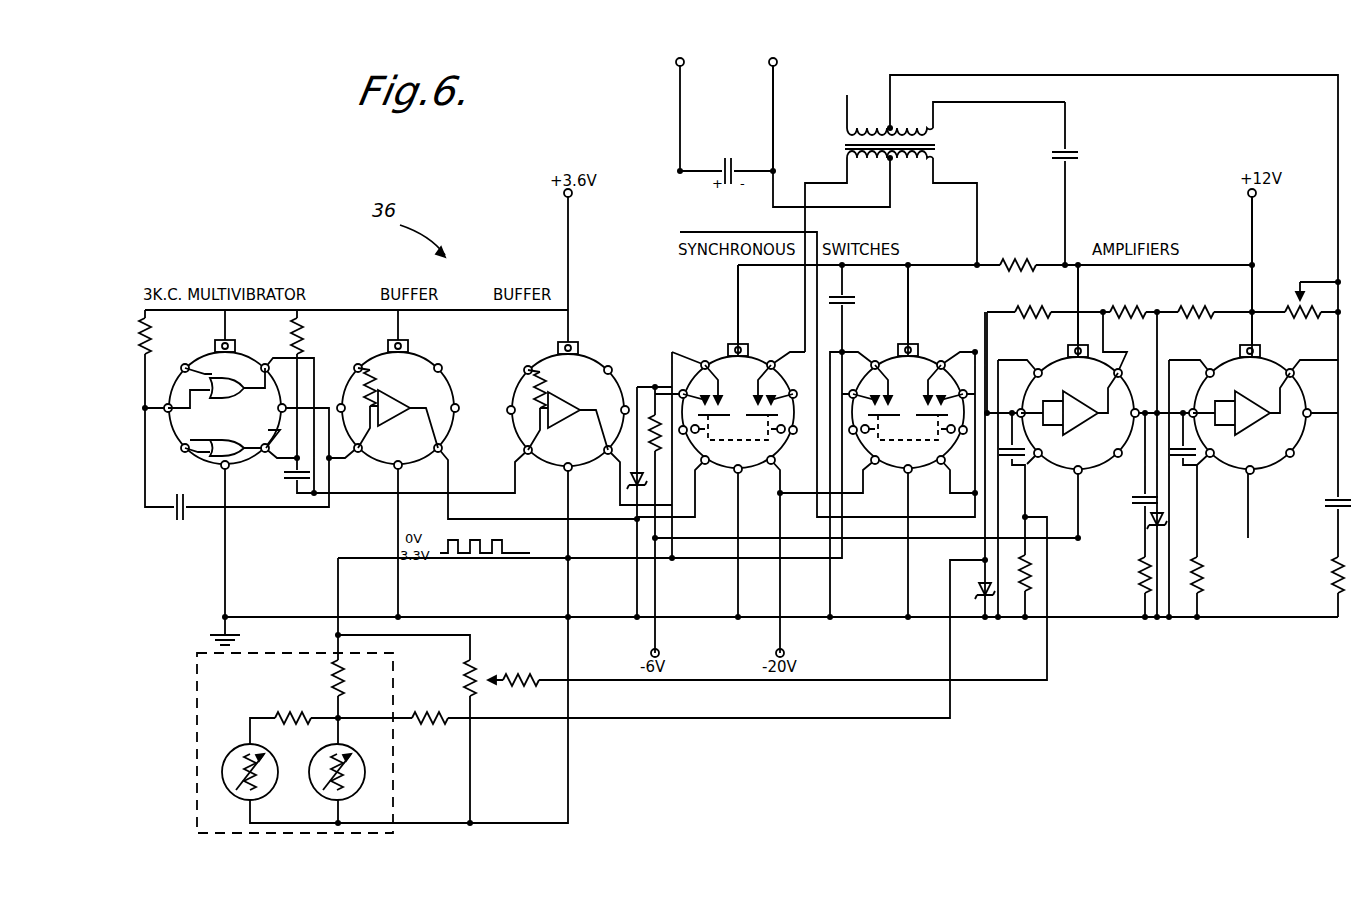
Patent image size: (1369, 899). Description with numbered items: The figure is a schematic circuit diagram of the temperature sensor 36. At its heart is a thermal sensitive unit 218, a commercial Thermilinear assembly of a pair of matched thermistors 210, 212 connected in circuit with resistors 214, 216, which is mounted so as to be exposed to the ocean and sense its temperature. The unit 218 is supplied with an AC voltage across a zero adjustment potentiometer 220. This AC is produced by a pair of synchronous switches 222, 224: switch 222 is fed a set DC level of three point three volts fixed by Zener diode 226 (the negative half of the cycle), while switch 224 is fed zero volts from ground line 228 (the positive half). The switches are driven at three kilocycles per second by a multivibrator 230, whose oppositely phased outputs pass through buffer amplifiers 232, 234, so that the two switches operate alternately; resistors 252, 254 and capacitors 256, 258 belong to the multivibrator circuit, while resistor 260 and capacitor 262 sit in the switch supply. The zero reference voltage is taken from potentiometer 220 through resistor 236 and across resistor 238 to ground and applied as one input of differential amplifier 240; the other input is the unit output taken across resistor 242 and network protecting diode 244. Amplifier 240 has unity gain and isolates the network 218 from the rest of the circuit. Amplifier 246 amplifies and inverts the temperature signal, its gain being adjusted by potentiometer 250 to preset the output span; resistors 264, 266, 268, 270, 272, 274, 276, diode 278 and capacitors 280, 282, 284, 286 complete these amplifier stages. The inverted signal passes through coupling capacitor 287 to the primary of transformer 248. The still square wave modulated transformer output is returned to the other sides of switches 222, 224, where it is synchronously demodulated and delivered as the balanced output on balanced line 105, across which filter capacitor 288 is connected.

The balanced line 105 is at (775, 92).
The filter capacitor 288 is at (728, 157).
The transformer 248 is at (930, 118).
The coupling capacitor 287 is at (1075, 148).
The temperature sensor 36 is at (384, 210).
The resistor 264 is at (1018, 258).
The resistor 266 is at (1035, 290).
The resistor 268 is at (1128, 305).
The resistor 276 is at (1196, 305).
The potentiometer 250 is at (1297, 320).
The resistor 252 is at (152, 338).
The three kilocycle multivibrator 230 is at (268, 330).
The resistor 254 is at (304, 338).
The buffer amplifier 232 is at (430, 348).
The buffer amplifier 234 is at (590, 355).
The resistor 260 is at (648, 405).
The synchronous switch 222 is at (730, 360).
The capacitor 262 is at (848, 306).
The synchronous switch 224 is at (915, 360).
The Zener diode 226 is at (628, 485).
The capacitor 256 is at (288, 478).
The capacitor 258 is at (174, 515).
The capacitor 280 is at (1012, 460).
The differential amplifier 240 is at (1100, 465).
The capacitor 284 is at (1138, 505).
The capacitor 282 is at (1190, 460).
The amplifier 246 is at (1265, 468).
The capacitor 286 is at (1330, 510).
The diode 278 is at (1165, 520).
The ground line 228 is at (855, 620).
The resistor 238 is at (1032, 570).
The resistor 270 is at (1138, 575).
The resistor 274 is at (1204, 582).
The resistor 272 is at (1331, 582).
The network protecting diode 244 is at (978, 588).
The thermal sensitive unit 218 is at (197, 673).
The resistor 214 is at (285, 712).
The resistor 216 is at (365, 677).
The zero adjustment potentiometer 220 is at (465, 690).
The resistor 236 is at (522, 672).
The resistor 242 is at (428, 725).
The thermistor 210 is at (276, 785).
The thermistor 212 is at (364, 785).